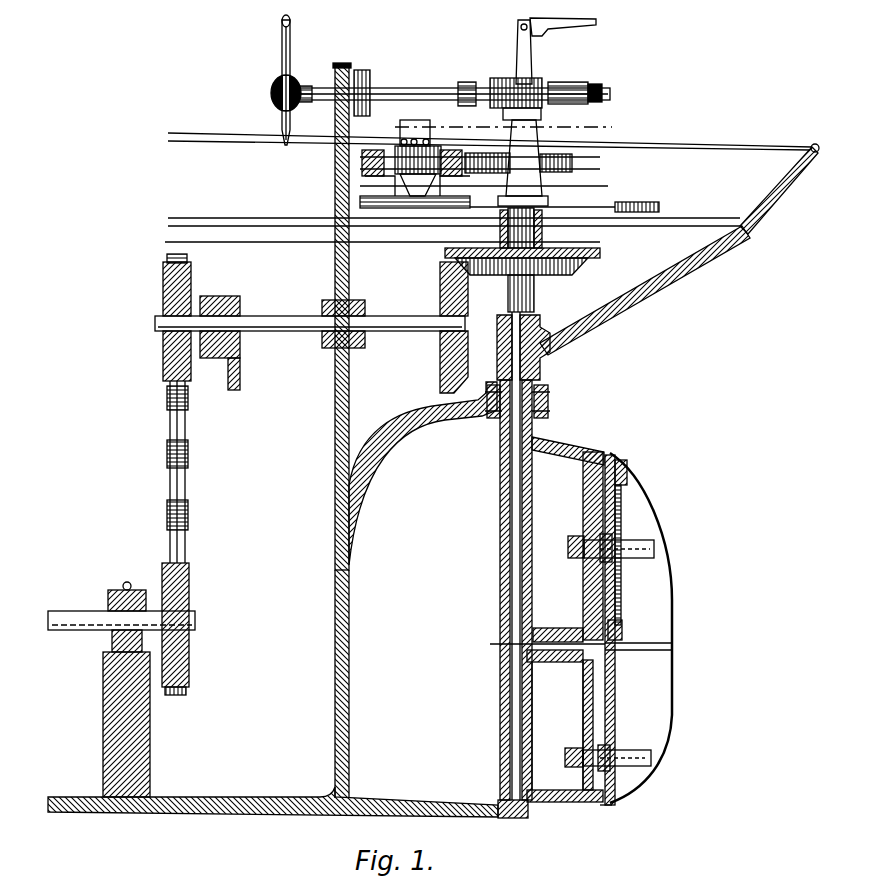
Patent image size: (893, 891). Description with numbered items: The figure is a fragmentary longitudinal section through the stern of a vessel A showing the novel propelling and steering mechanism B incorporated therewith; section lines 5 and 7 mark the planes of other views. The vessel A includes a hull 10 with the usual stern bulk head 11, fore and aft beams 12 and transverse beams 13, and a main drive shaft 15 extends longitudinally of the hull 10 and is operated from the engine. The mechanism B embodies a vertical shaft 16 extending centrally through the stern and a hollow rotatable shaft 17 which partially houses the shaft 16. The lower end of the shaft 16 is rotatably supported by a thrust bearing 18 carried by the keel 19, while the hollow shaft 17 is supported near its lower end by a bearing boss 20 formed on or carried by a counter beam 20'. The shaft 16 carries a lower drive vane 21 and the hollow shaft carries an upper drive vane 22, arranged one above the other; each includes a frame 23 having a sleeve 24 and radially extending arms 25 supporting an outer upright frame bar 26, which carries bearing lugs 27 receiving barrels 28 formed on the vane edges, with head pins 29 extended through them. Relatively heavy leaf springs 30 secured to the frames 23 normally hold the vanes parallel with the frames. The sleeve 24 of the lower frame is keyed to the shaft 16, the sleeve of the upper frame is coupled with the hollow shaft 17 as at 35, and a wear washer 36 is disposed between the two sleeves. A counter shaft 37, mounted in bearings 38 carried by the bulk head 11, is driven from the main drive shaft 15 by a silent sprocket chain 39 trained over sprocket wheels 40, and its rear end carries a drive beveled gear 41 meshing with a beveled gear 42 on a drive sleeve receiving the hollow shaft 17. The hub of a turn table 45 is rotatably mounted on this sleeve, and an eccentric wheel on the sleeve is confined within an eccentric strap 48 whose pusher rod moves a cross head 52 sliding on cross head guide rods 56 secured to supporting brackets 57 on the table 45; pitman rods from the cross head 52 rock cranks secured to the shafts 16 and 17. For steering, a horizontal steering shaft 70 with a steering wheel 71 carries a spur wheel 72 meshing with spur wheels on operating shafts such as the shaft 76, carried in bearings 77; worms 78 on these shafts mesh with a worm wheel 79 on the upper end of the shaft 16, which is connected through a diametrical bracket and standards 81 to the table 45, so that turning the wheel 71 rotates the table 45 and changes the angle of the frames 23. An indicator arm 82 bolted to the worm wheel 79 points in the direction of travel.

The section line 5- 5 is at (622, 131).
The section line 7- 7 is at (675, 747).
The hull 10 is at (345, 668).
The stern bulk head 11 is at (334, 405).
The fore and aft beams 12 is at (268, 240).
The transverse beams 13 is at (604, 250).
The main drive shaft 15 is at (72, 612).
The vertical shaft 16 is at (502, 590).
The hollow rotatable shaft 17 is at (533, 314).
The thrust bearing 18 is at (525, 818).
The keel 19 is at (300, 812).
The bearing boss 20 is at (645, 290).
The counter beam 20' is at (751, 214).
The lower drive vane 21 is at (640, 790).
The upper drive vane 22 is at (672, 578).
The frame 23 is at (580, 450).
The sleeve 24 is at (503, 712).
The radially extending arms 25 is at (575, 803).
The outer upright frame bar 26 is at (583, 510).
The bearing lugs 27 is at (617, 480).
The barrels 28 is at (621, 512).
The head pins 29 is at (624, 462).
The leaf springs 30 is at (655, 546).
The coupling 35 is at (551, 392).
The wear washer 36 is at (498, 650).
The counter shaft 37 is at (292, 332).
The bearings 38 is at (360, 311).
The silent sprocket chain 39 is at (189, 486).
The sprocket wheels 40 is at (165, 372).
The drive beveled gear 41 is at (444, 384).
The beveled gear 42 is at (452, 262).
The turn table 45 is at (658, 203).
The eccentric strap 48 is at (573, 162).
The cross head 52 is at (440, 172).
The cross head guide rods 56 is at (362, 163).
The supporting brackets 57 is at (360, 182).
The steering shaft 70 is at (313, 86).
The steering wheel 71 is at (282, 38).
The spur wheel 72 is at (370, 86).
The operating shaft 76 is at (428, 88).
The bearings 77 is at (466, 83).
The worms 78 is at (533, 80).
The worm wheel 79 is at (572, 83).
The standards 81 is at (523, 163).
The indicator arm 82 is at (567, 28).
The vessel A is at (350, 561).
The propelling and steering mechanism B is at (494, 184).